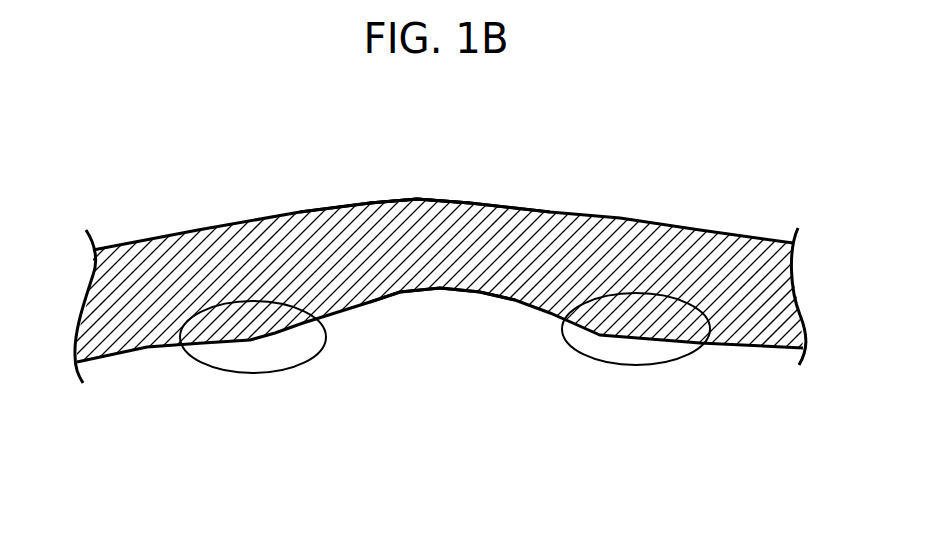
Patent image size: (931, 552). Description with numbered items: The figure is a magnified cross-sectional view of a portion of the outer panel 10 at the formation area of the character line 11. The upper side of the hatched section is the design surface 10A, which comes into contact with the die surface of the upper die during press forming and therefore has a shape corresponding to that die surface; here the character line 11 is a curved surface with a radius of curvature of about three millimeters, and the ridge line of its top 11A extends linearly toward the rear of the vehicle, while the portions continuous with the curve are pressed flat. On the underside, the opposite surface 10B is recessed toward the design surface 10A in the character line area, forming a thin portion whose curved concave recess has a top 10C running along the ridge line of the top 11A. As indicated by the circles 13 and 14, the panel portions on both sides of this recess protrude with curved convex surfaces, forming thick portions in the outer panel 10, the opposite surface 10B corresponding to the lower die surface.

The outer panel 10 is at (663, 252).
The design surface 10A is at (198, 230).
The opposite surface 10B is at (148, 345).
The top of the recessed portion 10C is at (448, 282).
The character line 11 is at (470, 165).
The top of the character line 11A is at (402, 200).
The circle 13 is at (265, 373).
The circle 14 is at (622, 365).